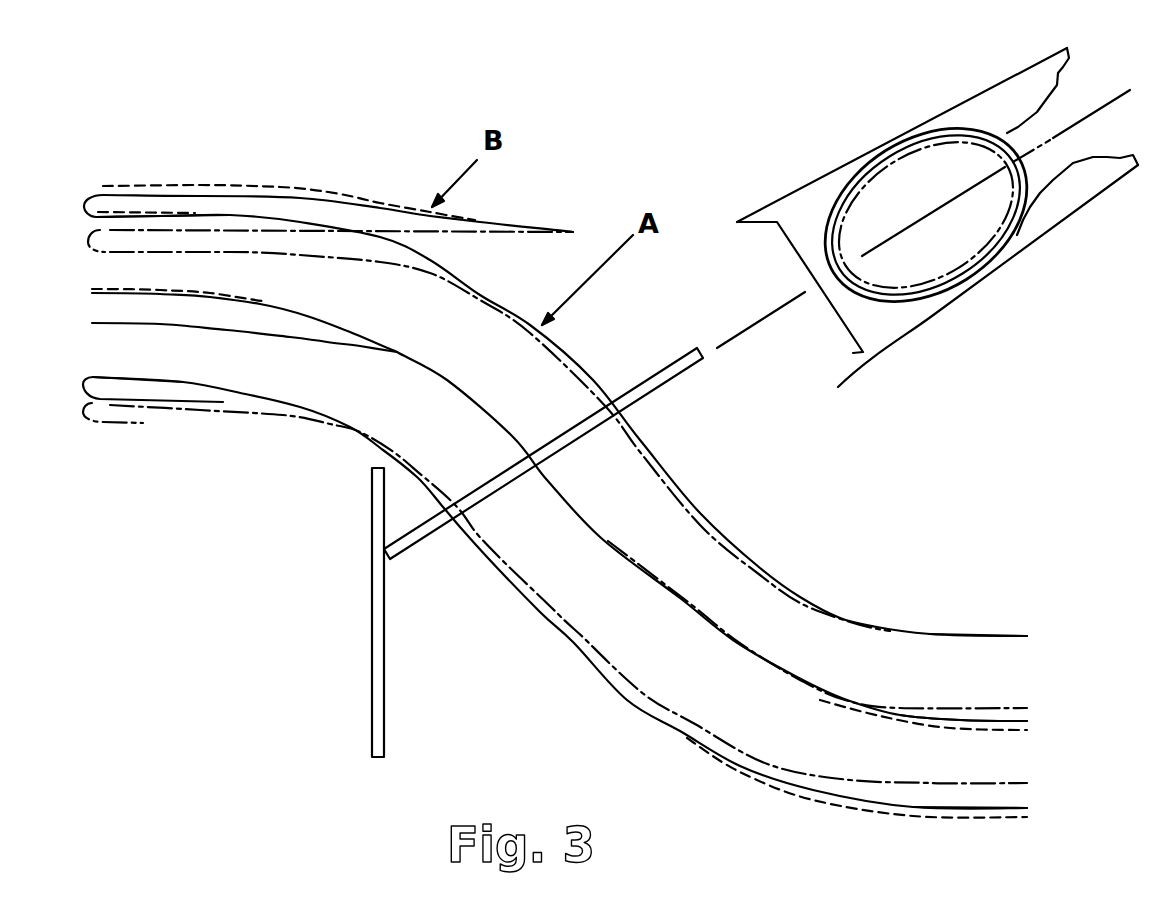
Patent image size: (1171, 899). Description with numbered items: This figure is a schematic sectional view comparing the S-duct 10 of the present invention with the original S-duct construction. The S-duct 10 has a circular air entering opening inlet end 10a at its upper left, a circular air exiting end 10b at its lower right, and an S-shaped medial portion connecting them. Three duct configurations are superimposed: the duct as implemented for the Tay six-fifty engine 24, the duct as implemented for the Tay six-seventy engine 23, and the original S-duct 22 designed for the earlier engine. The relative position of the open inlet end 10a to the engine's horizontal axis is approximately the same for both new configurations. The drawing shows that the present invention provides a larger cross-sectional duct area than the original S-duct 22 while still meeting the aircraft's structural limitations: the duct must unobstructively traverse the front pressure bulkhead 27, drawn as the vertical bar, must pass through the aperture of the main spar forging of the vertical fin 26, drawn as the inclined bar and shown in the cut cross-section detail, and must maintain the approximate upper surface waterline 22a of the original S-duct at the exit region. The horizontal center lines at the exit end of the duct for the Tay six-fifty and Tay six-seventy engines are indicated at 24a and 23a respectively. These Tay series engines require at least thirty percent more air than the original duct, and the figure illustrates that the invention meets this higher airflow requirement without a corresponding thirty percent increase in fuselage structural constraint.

The S-duct 10 is at (890, 142).
The air entering opening inlet end 10a is at (104, 359).
The air exiting end 10b is at (1048, 781).
The original S-duct 22 is at (202, 251).
The upper surface waterline 22a is at (950, 635).
The Tay 670 engine S-duct 23 is at (186, 212).
The horizontal center line at exit end for Tay 670 engine 23a is at (1027, 730).
The Tay 650 engine S-duct 24 is at (240, 215).
The horizontal center line at exit end for Tay 650 engine 24a is at (1027, 718).
The main spar forging of the vertical fin 26 is at (830, 305).
The front pressure bulkhead 27 is at (384, 667).